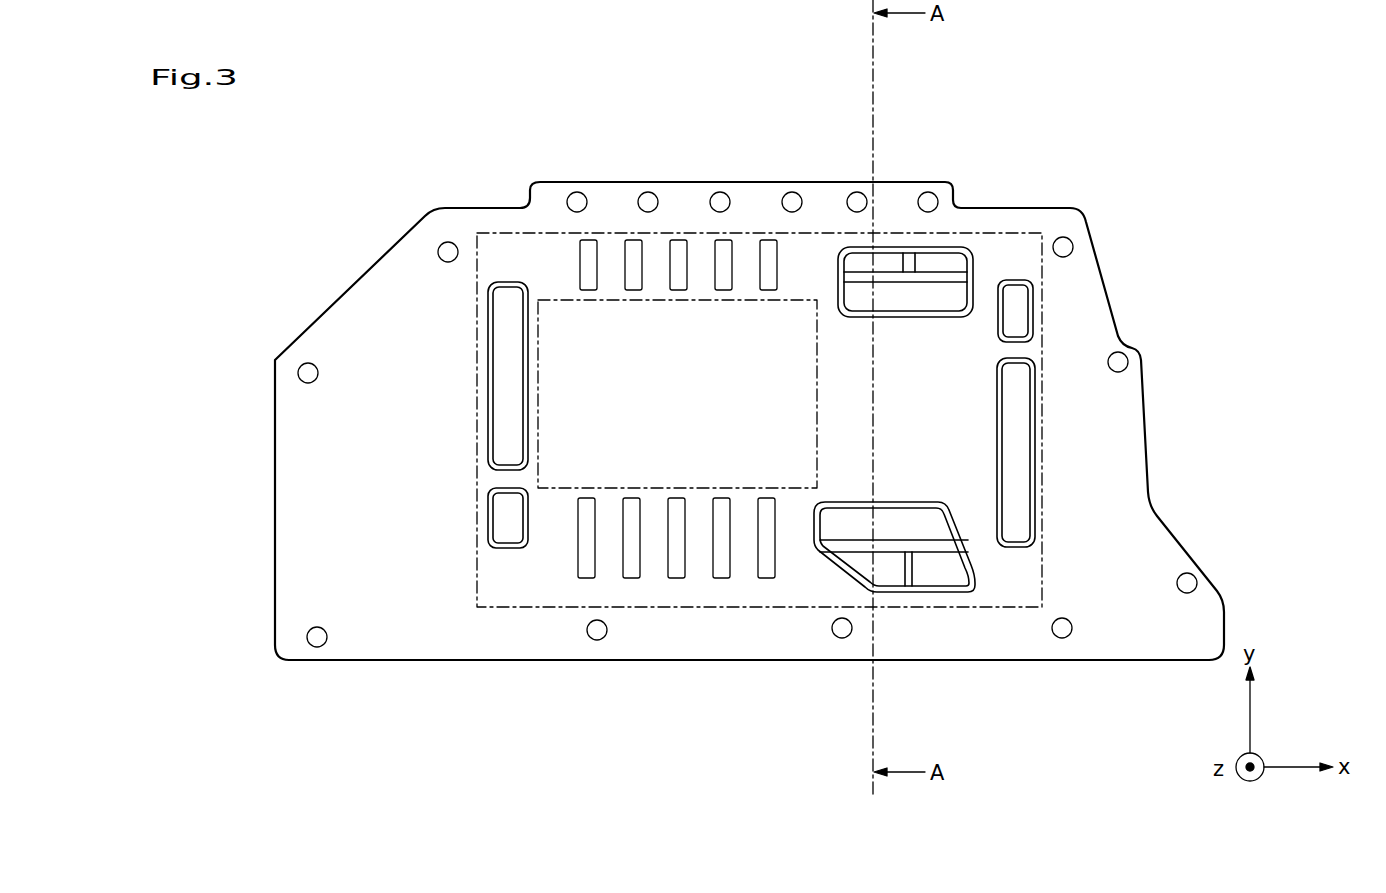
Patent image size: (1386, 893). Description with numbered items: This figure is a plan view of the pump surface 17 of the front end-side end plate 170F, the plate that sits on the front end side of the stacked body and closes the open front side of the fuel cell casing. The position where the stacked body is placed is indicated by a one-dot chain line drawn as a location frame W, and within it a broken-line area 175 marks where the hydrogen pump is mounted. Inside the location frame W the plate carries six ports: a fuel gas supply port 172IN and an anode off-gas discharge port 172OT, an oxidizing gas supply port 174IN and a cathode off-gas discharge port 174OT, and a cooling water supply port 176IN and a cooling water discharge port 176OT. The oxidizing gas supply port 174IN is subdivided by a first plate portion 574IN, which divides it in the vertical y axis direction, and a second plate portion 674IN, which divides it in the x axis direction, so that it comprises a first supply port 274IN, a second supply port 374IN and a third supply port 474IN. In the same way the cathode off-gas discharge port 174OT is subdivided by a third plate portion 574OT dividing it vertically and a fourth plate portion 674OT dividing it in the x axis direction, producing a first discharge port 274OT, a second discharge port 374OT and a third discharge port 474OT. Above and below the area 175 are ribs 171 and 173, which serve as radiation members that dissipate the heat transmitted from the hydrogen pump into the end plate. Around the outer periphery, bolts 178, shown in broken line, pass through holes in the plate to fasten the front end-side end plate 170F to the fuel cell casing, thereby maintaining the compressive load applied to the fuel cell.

The pump surface 17 is at (417, 265).
The front end-side end plate 170F is at (1158, 122).
The location frame W is at (677, 607).
The area 175 is at (536, 403).
The rib 171 is at (768, 291).
The rib 173 is at (766, 497).
The cooling water discharge port 176OT is at (505, 316).
The cooling water supply port 176IN is at (1022, 450).
The anode off-gas discharge port 172OT is at (500, 520).
The fuel gas supply port 172IN is at (1022, 298).
The cathode off-gas discharge port 174OT is at (1082, 100).
The first discharge port 274OT is at (952, 262).
The second discharge port 374OT is at (897, 265).
The third discharge port 474OT is at (955, 290).
The third plate portion 574OT is at (890, 284).
The fourth plate portion 674OT is at (968, 306).
The oxidizing gas supply port 174IN is at (1088, 728).
The first supply port 274IN is at (933, 523).
The second supply port 374IN is at (885, 568).
The third supply port 474IN is at (940, 572).
The first plate portion 574IN is at (847, 533).
The second plate portion 674IN is at (903, 560).
The bolt 178 is at (926, 192).